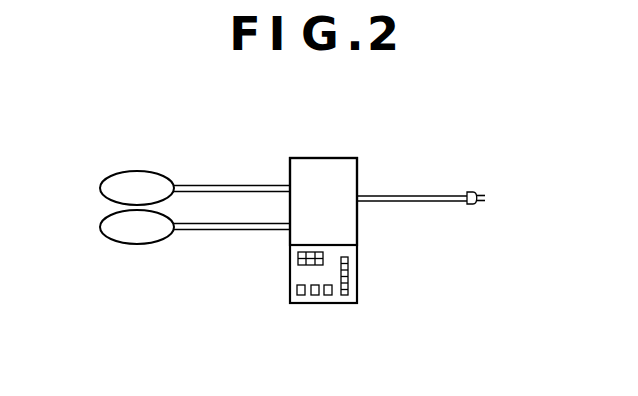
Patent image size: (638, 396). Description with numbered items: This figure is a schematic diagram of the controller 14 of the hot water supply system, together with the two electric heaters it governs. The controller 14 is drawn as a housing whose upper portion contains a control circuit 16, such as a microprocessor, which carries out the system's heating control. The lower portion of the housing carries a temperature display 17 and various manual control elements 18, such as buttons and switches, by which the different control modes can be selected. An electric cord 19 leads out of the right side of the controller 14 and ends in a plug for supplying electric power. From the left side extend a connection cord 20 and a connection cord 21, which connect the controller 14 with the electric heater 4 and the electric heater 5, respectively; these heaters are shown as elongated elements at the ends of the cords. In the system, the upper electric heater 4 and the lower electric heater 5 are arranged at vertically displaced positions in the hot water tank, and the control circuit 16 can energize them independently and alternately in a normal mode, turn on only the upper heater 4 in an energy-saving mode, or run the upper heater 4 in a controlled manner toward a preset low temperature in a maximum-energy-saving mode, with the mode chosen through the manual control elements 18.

The electric heater 4 is at (158, 172).
The electric heater 5 is at (124, 244).
The controller 14 is at (367, 232).
The control circuit 16 is at (332, 183).
The temperature display 17 is at (298, 265).
The manual control elements 18 is at (314, 303).
The electric cord 19 is at (413, 193).
The connection cord 20 is at (225, 185).
The connection cord 21 is at (196, 231).